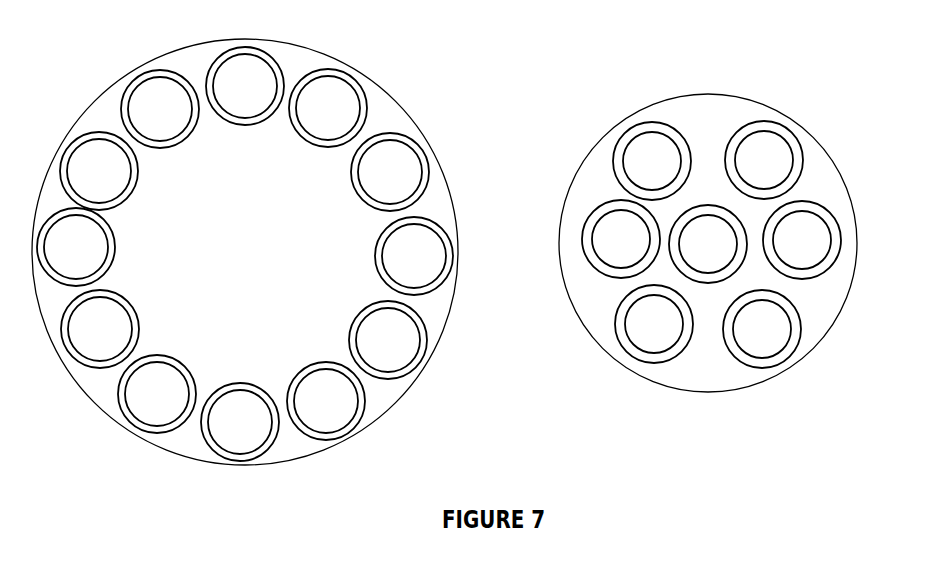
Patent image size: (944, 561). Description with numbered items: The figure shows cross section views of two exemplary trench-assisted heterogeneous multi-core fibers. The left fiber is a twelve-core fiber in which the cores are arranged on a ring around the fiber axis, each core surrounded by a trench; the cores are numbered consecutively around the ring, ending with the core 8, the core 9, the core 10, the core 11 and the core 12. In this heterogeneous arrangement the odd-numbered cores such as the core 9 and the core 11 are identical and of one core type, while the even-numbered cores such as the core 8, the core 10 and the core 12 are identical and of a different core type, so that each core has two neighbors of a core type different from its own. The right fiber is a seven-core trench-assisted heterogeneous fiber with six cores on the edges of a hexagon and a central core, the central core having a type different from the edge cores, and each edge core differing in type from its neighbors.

The core 8 is at (157, 394).
The core 9 is at (100, 329).
The core 10 is at (76, 247).
The core 11 is at (99, 171).
The core 12 is at (160, 109).